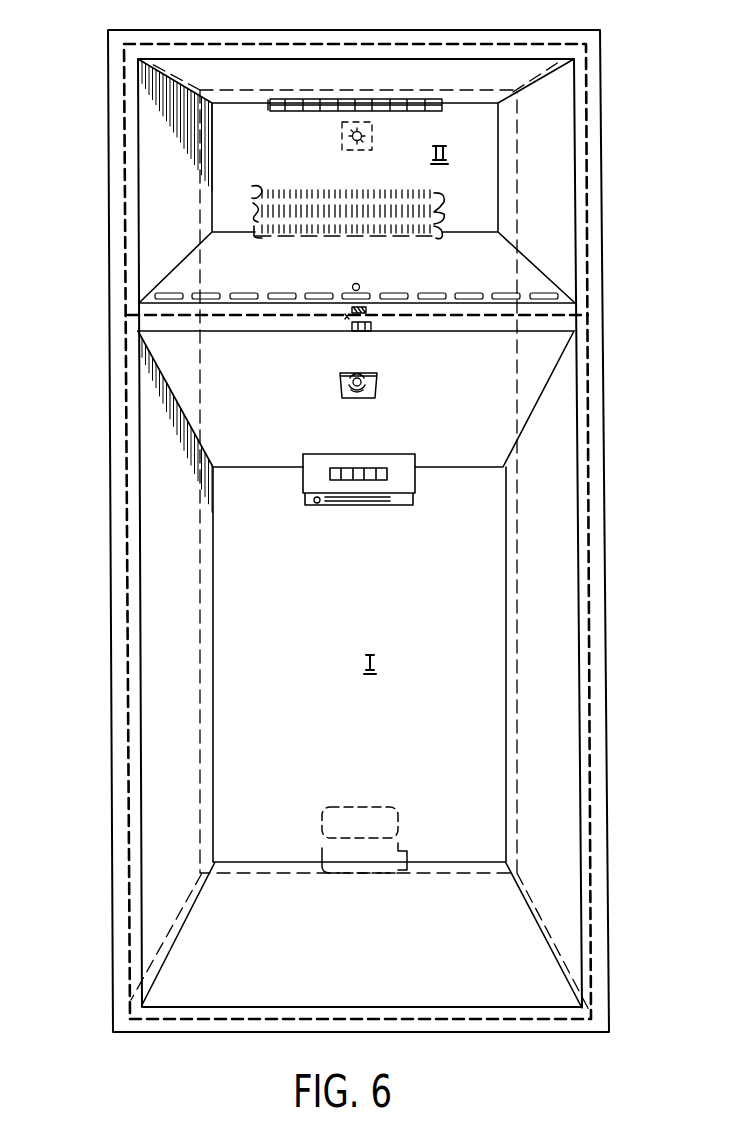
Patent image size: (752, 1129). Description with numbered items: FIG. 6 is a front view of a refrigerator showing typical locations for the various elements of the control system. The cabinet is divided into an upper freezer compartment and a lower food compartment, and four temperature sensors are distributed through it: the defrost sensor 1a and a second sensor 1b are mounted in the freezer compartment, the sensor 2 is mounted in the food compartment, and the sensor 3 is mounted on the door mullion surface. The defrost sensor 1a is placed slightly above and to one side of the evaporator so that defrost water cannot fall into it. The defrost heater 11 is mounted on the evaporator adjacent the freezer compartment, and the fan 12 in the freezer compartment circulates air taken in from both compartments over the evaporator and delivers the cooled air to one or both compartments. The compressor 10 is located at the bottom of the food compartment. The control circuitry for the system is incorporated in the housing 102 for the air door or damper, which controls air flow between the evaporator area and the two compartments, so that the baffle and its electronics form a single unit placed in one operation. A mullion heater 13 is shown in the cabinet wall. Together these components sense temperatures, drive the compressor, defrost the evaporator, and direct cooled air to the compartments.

The defrost sensor 1a is at (250, 185).
The temperature sensor 1b is at (352, 287).
The temperature sensor 2 is at (313, 501).
The temperature sensor 3 is at (346, 320).
The compressor 10 is at (400, 818).
The defrost heater 11 is at (450, 224).
The fan 12 is at (340, 124).
The mullion heater 13 is at (587, 177).
The housing 102 is at (415, 470).